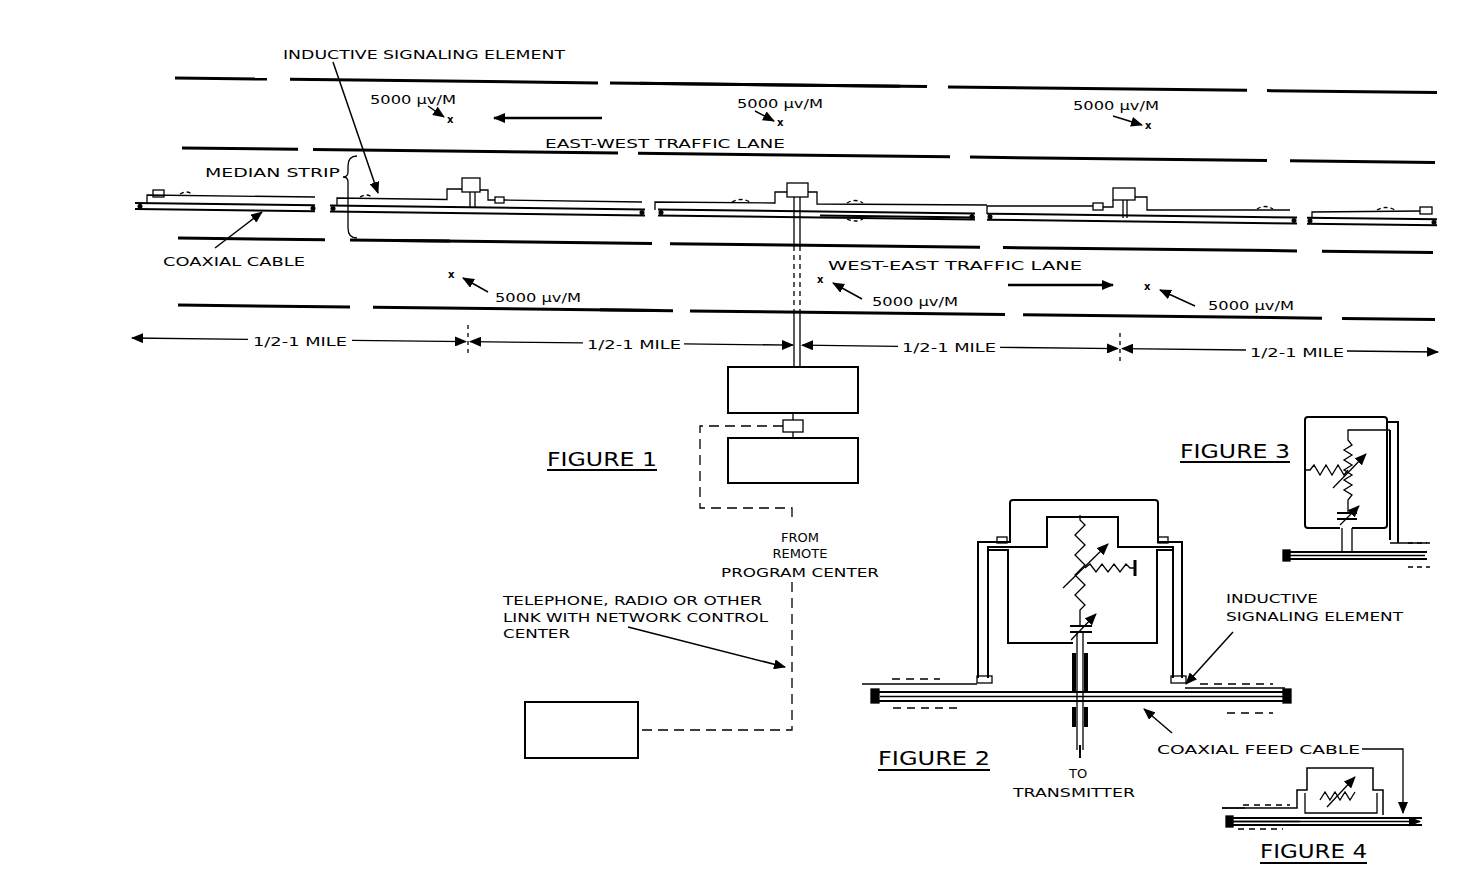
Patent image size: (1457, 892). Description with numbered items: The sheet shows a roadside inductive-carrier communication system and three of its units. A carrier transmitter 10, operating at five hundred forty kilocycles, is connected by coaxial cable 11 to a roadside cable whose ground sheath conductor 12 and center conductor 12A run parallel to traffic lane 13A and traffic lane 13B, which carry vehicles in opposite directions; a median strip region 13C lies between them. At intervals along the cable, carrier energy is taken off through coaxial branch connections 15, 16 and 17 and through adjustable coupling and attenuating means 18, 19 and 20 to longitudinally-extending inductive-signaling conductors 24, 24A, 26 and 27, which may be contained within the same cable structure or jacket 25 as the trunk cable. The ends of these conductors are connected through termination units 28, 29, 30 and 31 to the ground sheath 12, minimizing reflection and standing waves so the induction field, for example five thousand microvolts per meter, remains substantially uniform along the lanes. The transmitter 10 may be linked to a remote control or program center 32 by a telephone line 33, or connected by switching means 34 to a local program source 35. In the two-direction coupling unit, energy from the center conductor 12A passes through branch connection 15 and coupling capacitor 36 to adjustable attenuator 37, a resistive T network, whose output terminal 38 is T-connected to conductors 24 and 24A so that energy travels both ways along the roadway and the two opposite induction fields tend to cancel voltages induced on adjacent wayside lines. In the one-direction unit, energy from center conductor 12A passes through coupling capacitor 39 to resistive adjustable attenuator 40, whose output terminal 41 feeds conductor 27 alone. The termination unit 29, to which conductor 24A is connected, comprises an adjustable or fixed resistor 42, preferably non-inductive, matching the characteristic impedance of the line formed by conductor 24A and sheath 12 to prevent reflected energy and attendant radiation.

In FIG. 1, the carrier transmitter 10 is at (858, 405).
In FIG. 1, the coaxial cable 11 is at (802, 342).
In FIG. 1, the ground sheath conductor 12 is at (835, 210).
In FIG. 2, the ground sheath conductor 12 is at (1048, 680).
In FIG. 3, the ground sheath conductor 12 is at (1378, 560).
In FIG. 4, the ground sheath conductor 12 is at (1255, 828).
In FIG. 1, the center conductor 12A is at (880, 215).
In FIG. 2, the center conductor 12A is at (1045, 703).
In FIG. 3, the center conductor 12A is at (1283, 554).
In FIG. 4, the center conductor 12A is at (1228, 823).
In FIG. 1, the traffic lane 13A is at (700, 98).
In FIG. 1, the traffic lane 13B is at (666, 281).
In FIG. 1, the median strip section 13C is at (409, 241).
In FIG. 1, the coaxial branch connection 15 is at (805, 205).
In FIG. 2, the coaxial branch connection 15 is at (1087, 673).
In FIG. 1, the coaxial branch connection 16 is at (499, 197).
In FIG. 1, the coaxial branch connection 17 is at (1121, 205).
In FIG. 1, the adjustable coupling and attenuating means 18 is at (800, 183).
In FIG. 2, the adjustable coupling and attenuating means 18 is at (1158, 512).
In FIG. 1, the adjustable coupling and attenuating means 19 is at (470, 178).
In FIG. 1, the adjustable coupling and attenuating means 20 is at (1130, 188).
In FIG. 3, the adjustable coupling and attenuating means 20 is at (1385, 400).
In FIG. 1, the inductive-signaling conductor 24 is at (713, 202).
In FIG. 2, the inductive-signaling conductor 24 is at (864, 681).
In FIG. 1, the inductive-signaling conductor 24A is at (960, 205).
In FIG. 2, the inductive-signaling conductor 24A is at (1285, 688).
In FIG. 4, the inductive-signaling conductor 24A is at (1222, 806).
In FIG. 1, the cable structure or jacket 25 is at (186, 218).
In FIG. 2, the cable structure or jacket 25 is at (939, 682).
In FIG. 3, the cable structure or jacket 25 is at (1412, 568).
In FIG. 4, the cable structure or jacket 25 is at (1250, 808).
In FIG. 1, the inductive-signaling conductor 26 is at (426, 198).
In FIG. 1, the inductive-signaling conductor 27 is at (1213, 210).
In FIG. 3, the inductive-signaling conductor 27 is at (1398, 542).
In FIG. 1, the termination unit 28 is at (510, 200).
In FIG. 1, the termination unit 29 is at (1093, 205).
In FIG. 4, the termination unit 29 is at (1297, 792).
In FIG. 1, the termination unit 30 is at (157, 191).
In FIG. 1, the termination unit 31 is at (1424, 207).
In FIG. 1, the remote control or program center 32 is at (638, 710).
In FIG. 1, the telephone line 33 is at (792, 642).
In FIG. 1, the switching means 34 is at (803, 426).
In FIG. 1, the local program source 35 is at (858, 470).
In FIG. 2, the coupling capacitor 36 is at (1091, 628).
In FIG. 2, the adjustable attenuator 37 is at (1083, 568).
In FIG. 2, the output terminal 38 is at (1082, 520).
In FIG. 3, the coupling capacitor 39 is at (1337, 516).
In FIG. 3, the adjustable attenuator 40 is at (1342, 471).
In FIG. 3, the output terminal 41 is at (1348, 431).
In FIG. 4, the adjustable or fixed resistor 42 is at (1325, 772).